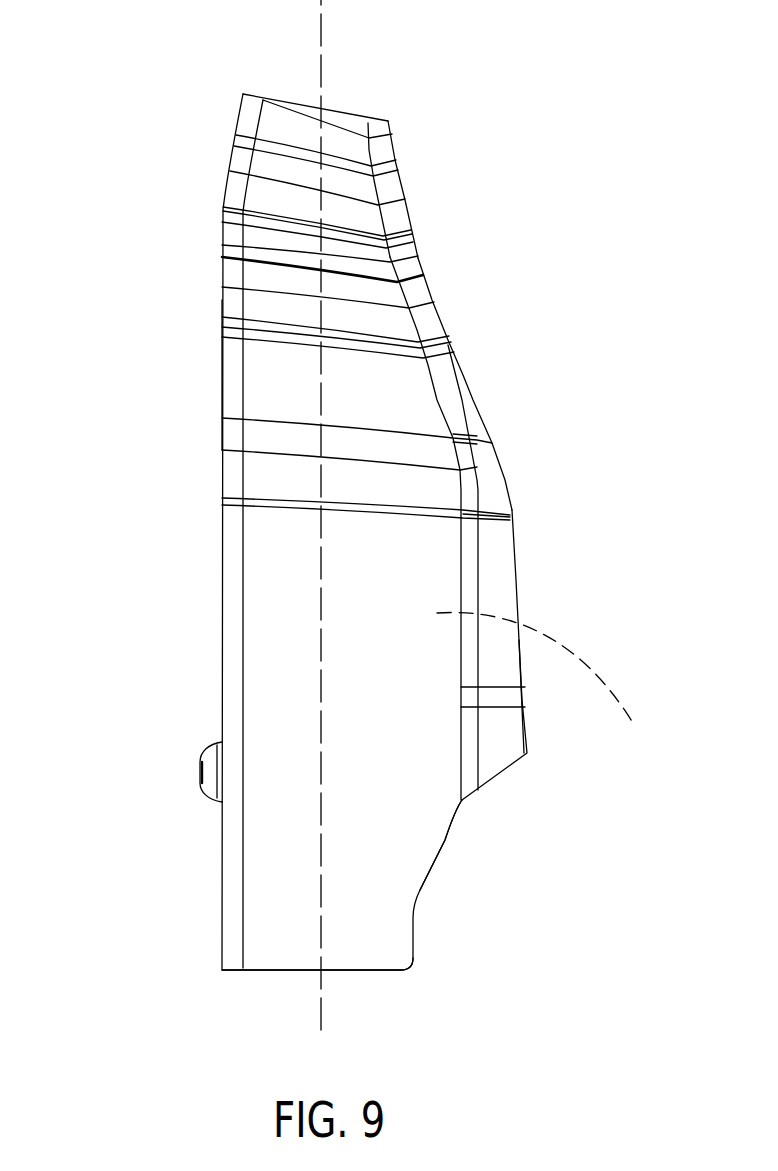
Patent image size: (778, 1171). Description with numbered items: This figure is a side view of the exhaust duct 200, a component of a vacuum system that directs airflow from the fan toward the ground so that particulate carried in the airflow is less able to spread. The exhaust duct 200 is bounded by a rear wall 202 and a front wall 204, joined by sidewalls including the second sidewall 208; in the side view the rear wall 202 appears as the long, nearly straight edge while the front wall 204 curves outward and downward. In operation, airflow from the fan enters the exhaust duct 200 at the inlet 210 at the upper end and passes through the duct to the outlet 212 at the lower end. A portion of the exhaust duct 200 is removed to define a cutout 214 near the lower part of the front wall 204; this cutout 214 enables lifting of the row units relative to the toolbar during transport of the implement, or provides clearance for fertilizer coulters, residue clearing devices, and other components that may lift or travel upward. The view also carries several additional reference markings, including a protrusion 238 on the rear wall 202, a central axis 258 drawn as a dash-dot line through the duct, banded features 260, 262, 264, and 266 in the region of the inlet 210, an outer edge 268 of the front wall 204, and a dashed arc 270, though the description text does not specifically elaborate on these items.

The exhaust duct 200 is at (358, 523).
The rear wall 202 is at (211, 415).
The front wall 204 is at (550, 416).
The second sidewall 208 is at (286, 190).
The inlet 210 is at (281, 100).
The outlet 212 is at (343, 984).
The cutout 214 is at (491, 862).
The protrusion 238 is at (205, 757).
The central axis 258 is at (322, 50).
The side wall 260 is at (222, 375).
The upper band 262 is at (231, 152).
The rib 264 is at (410, 230).
The flange 266 is at (382, 143).
The outer edge 268 is at (515, 533).
The arc 270 is at (544, 685).